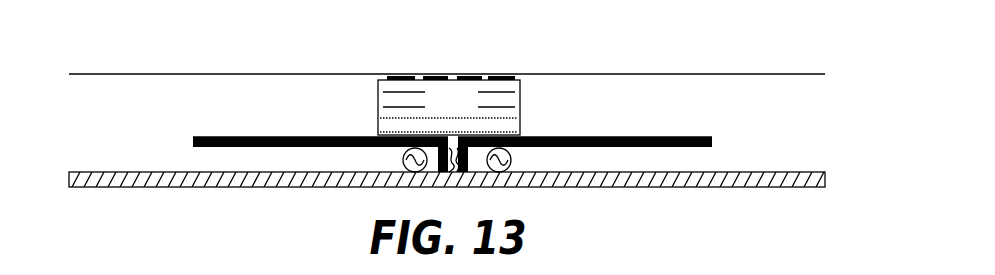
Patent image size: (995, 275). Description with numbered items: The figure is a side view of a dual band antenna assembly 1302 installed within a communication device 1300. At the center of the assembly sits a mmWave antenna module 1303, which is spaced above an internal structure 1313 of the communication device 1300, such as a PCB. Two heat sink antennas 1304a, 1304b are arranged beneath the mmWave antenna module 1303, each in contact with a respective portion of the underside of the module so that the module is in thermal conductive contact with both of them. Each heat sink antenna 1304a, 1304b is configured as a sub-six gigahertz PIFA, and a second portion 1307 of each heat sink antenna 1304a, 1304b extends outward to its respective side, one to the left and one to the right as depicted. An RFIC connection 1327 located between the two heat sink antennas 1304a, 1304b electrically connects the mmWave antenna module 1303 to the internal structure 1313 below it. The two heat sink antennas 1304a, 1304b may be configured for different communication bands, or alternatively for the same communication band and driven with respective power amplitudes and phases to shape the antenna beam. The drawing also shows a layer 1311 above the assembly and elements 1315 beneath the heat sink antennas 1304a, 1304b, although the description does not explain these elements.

The communication device 1300 is at (200, 63).
The dual band antenna assembly 1302 is at (261, 120).
The mmWave antenna module 1303 is at (438, 113).
The heat sink antenna 1304a is at (193, 135).
The heat sink antenna 1304b is at (714, 135).
The second portion 1307 is at (315, 136).
The cover layer 1311 is at (620, 72).
The internal structure 1313 is at (198, 188).
The power source 1315 is at (395, 145).
The RFIC connection 1327 is at (456, 150).